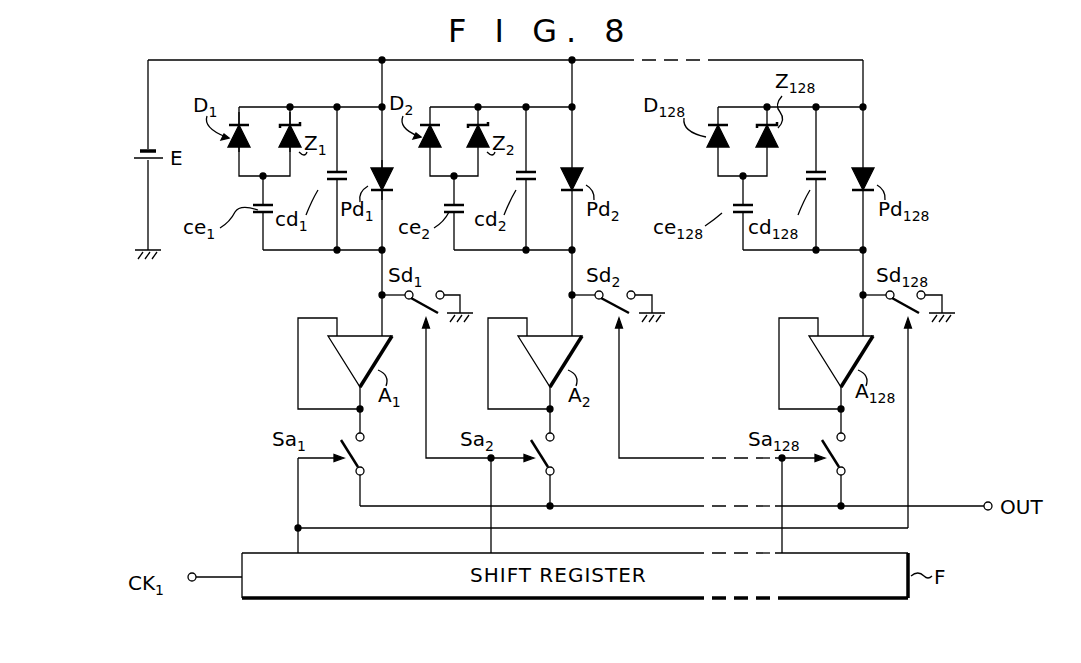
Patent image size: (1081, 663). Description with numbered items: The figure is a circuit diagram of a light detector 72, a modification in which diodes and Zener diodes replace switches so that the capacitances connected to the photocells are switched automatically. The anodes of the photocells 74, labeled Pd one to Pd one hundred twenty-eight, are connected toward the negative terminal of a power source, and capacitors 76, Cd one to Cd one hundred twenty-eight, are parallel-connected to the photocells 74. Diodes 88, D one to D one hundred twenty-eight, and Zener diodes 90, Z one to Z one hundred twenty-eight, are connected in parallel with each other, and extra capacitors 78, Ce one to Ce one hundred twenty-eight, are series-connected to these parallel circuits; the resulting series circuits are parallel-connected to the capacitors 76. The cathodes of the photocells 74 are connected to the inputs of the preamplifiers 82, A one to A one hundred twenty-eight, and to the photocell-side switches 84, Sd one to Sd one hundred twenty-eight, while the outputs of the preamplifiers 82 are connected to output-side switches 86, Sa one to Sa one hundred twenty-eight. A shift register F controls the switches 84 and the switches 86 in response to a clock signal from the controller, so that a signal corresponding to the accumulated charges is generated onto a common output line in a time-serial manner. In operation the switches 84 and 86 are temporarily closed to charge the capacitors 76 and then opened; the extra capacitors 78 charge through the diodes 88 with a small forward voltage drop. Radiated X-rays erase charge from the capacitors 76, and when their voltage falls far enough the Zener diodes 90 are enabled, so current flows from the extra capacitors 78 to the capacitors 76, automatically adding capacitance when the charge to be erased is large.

The light detector 72 is at (688, 60).
The photocells 74 is at (392, 178).
The capacitors 76 is at (326, 186).
The extra capacitors 78 is at (257, 216).
The amplifier A1 82 is at (344, 357).
The switch Sd1 84 is at (445, 297).
The switches 86 is at (298, 482).
The diodes 88 is at (233, 138).
The Zener diodes 90 is at (291, 116).